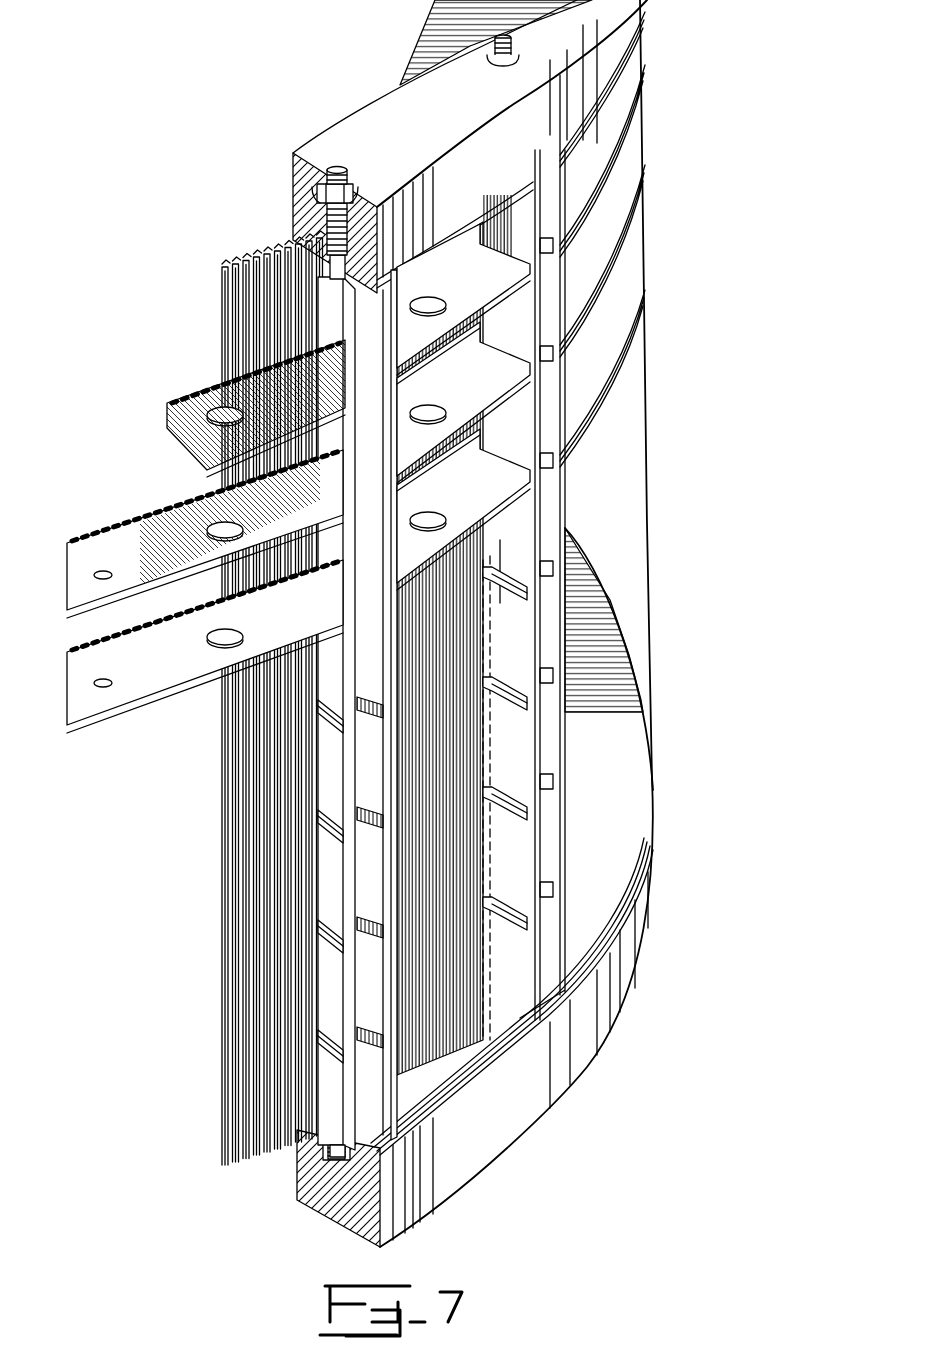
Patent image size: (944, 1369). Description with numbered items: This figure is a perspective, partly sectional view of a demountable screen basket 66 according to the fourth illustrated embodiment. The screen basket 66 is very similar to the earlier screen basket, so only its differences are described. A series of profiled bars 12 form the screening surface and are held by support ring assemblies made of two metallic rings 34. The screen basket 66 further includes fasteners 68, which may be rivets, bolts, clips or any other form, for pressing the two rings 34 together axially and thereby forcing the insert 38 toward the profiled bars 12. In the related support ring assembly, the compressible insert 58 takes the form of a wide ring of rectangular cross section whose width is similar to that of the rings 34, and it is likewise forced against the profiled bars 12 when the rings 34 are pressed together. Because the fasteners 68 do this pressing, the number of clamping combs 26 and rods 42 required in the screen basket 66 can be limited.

The demountable screen basket 66 is at (680, 140).
The rods 42 is at (320, 260).
The profiled bars 12 is at (236, 270).
The insert 38 is at (170, 428).
The rings 34 is at (200, 463).
The fasteners 68 is at (428, 413).
The compressible insert 58 is at (218, 637).
The clamping combs 26 is at (370, 867).